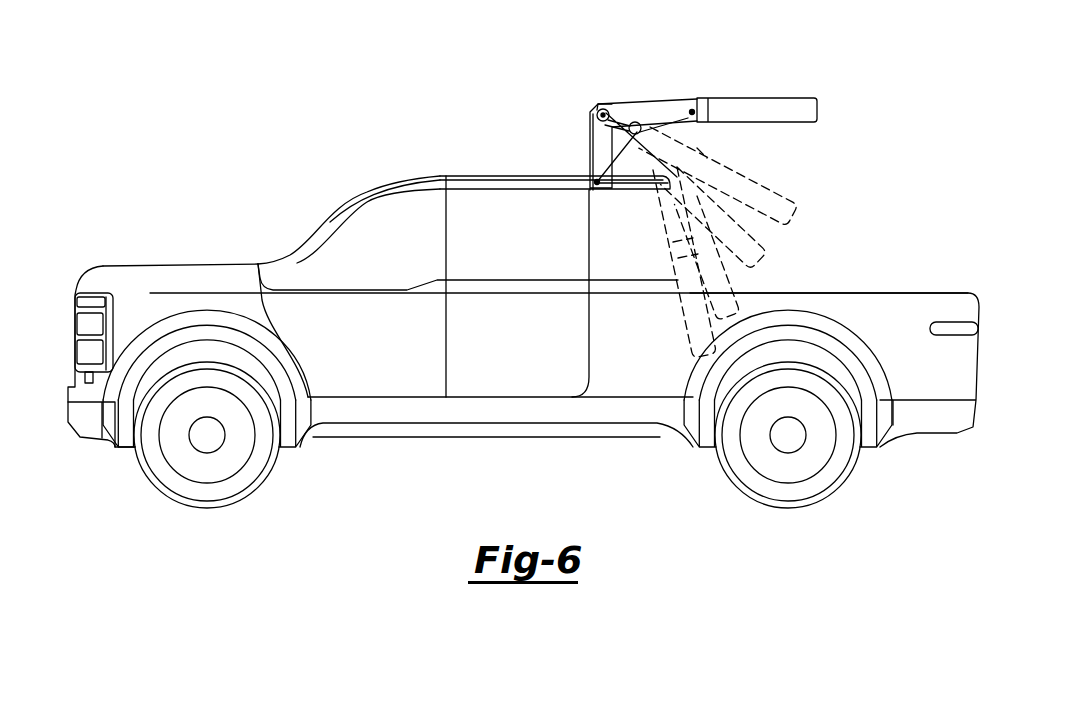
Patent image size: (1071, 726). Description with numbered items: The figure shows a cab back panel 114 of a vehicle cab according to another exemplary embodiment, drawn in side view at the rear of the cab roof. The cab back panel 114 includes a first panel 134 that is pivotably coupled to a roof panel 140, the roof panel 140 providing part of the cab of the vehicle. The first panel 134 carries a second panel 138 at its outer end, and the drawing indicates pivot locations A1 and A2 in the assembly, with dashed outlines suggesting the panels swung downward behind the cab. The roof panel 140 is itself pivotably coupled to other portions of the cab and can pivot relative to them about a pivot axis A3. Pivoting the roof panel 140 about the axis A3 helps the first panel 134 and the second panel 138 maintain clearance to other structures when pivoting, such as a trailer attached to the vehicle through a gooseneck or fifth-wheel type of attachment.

The cab back panel 114 is at (707, 191).
The first panel 134 is at (653, 115).
The second panel 138 is at (765, 112).
The roof panel 140 is at (598, 145).
The first pivot axis A1 is at (603, 109).
The second pivot axis A2 is at (691, 109).
The pivot axis A3 is at (597, 184).